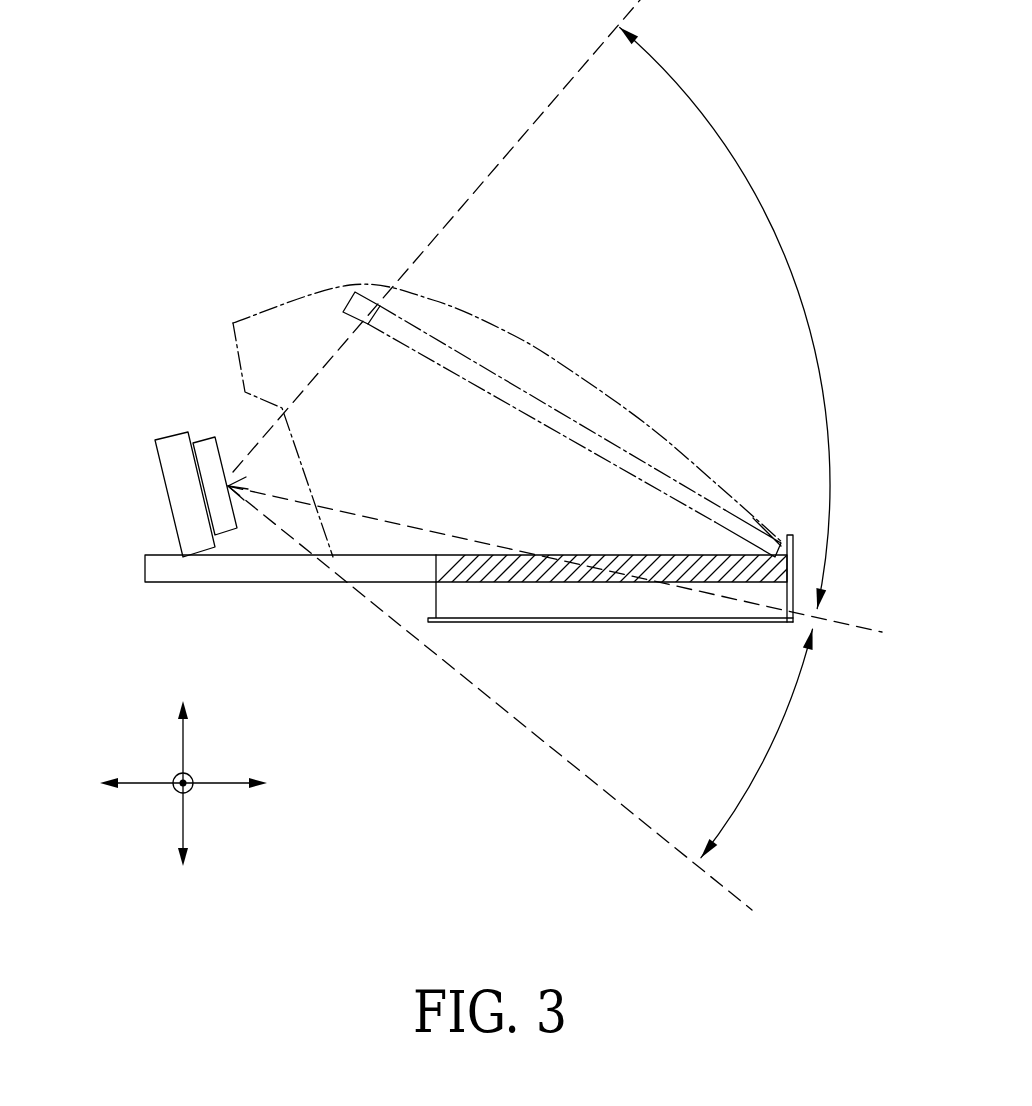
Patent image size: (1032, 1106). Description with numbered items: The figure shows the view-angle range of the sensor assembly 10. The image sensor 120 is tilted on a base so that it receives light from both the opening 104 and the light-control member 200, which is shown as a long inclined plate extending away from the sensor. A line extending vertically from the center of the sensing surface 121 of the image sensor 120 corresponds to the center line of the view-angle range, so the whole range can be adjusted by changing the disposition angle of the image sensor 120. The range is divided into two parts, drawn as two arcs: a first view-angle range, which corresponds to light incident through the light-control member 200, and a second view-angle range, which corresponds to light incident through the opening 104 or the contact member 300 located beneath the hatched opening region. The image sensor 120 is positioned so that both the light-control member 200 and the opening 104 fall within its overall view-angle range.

The sensor assembly 10 is at (262, 46).
The opening 104 is at (578, 565).
The image sensor 120 is at (172, 458).
The sensing surface 121 is at (222, 457).
The light-control member 200 is at (553, 415).
The contact member 300 is at (677, 603).